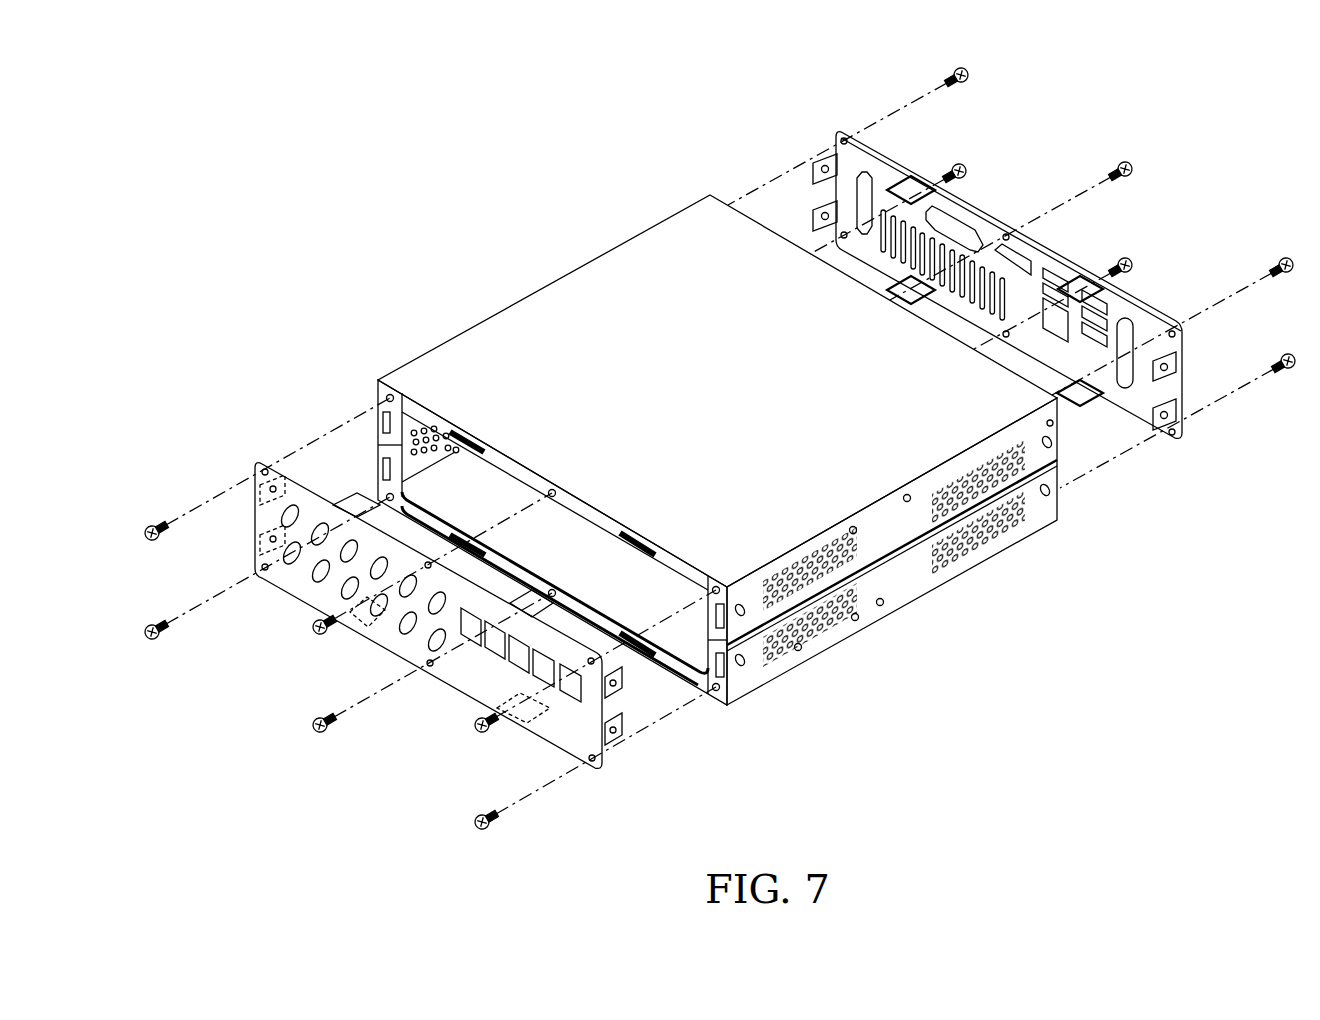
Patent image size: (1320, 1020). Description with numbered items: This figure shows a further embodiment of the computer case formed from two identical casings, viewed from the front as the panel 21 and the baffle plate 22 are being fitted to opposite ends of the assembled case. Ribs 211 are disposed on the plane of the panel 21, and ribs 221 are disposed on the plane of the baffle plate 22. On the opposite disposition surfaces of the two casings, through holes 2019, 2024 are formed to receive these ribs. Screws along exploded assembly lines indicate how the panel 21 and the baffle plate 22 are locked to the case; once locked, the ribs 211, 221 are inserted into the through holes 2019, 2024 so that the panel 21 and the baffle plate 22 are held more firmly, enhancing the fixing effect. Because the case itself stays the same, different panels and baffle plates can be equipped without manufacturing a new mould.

The panel 21 is at (519, 661).
The rib 211 is at (618, 740).
The baffle plate 22 is at (1057, 334).
The rib 221 is at (1158, 425).
The through hole 2019 is at (456, 432).
The through hole 2024 is at (648, 655).